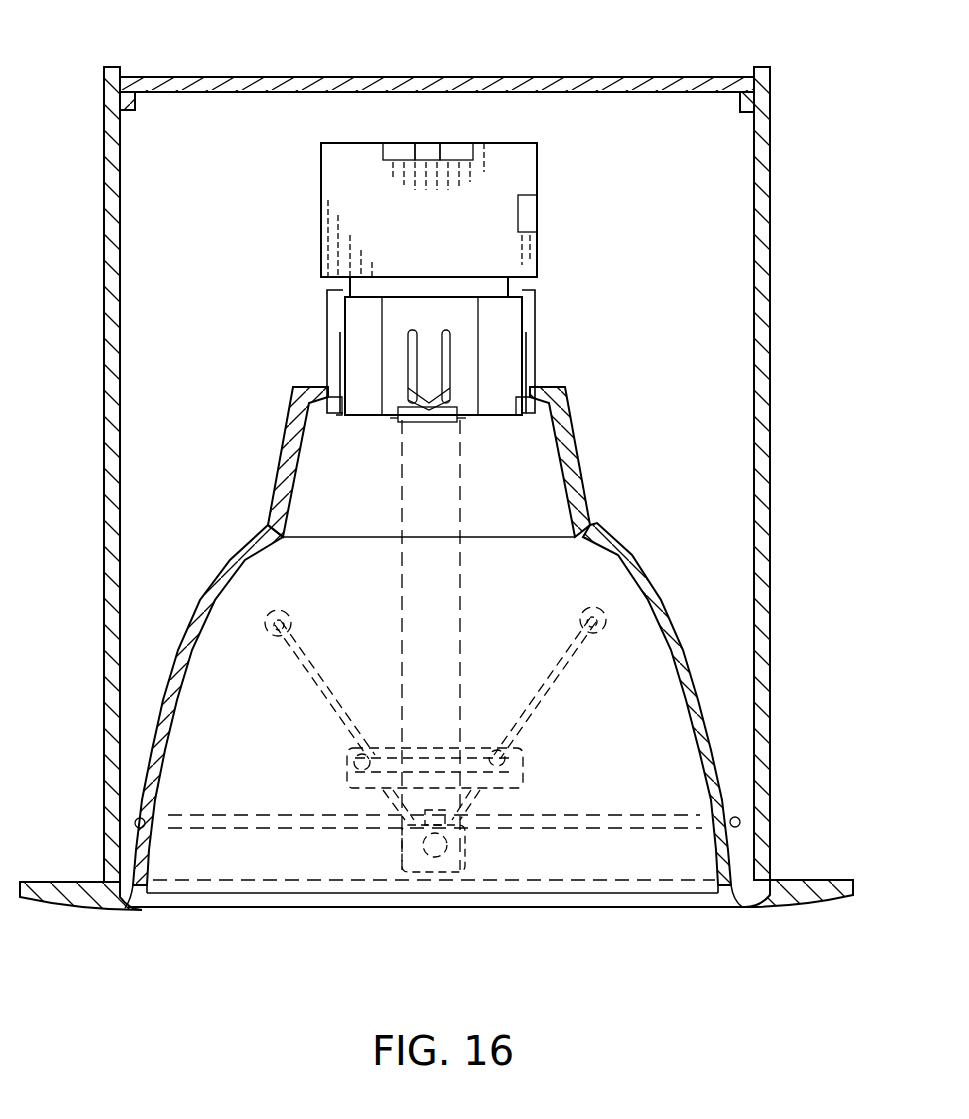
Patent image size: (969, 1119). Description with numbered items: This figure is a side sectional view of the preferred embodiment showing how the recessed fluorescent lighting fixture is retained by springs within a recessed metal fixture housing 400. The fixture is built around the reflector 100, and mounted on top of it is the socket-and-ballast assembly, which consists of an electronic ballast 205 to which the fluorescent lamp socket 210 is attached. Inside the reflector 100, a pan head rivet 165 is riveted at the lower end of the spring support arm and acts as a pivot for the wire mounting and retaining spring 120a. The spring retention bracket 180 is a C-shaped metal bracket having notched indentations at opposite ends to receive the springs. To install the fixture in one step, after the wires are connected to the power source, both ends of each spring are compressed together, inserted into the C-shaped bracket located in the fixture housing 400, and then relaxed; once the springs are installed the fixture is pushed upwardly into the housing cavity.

The fixture housing 400 is at (770, 194).
The reflector 100 is at (222, 555).
The electronic ballast 205 is at (451, 146).
The fluorescent lamp socket 210 is at (489, 349).
The mounting spring 120a is at (580, 613).
The spring retention bracket 180 is at (523, 765).
The pan head rivet 165 is at (459, 889).